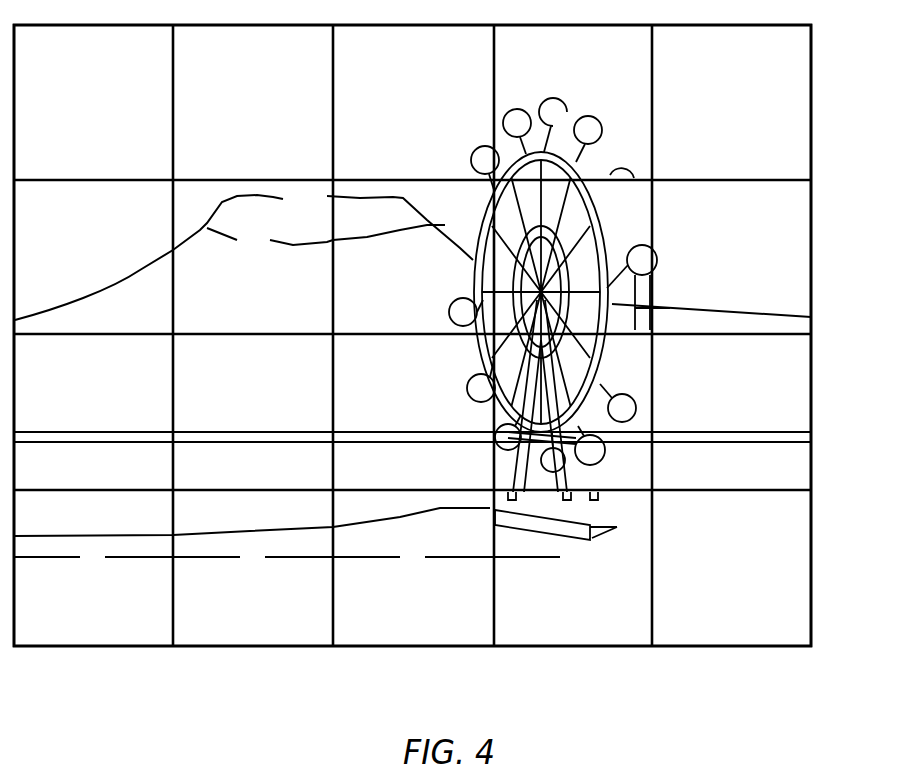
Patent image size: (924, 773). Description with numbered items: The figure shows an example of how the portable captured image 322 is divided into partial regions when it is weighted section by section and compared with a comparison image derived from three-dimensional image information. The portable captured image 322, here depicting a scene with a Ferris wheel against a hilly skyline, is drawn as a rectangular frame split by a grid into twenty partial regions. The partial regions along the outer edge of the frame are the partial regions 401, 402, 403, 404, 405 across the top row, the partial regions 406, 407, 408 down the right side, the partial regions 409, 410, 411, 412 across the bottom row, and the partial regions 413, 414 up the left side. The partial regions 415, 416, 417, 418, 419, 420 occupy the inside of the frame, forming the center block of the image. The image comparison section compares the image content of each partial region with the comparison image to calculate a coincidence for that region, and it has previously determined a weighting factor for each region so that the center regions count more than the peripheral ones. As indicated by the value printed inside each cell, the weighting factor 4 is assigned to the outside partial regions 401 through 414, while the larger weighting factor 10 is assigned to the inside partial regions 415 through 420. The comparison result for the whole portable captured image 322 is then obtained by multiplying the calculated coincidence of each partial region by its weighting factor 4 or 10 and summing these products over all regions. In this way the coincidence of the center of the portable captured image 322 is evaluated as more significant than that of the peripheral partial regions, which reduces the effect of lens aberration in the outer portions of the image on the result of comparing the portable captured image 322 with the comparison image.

The partial region 401 is at (93, 102).
The partial region 402 is at (253, 102).
The partial region 403 is at (413, 102).
The partial region 404 is at (573, 102).
The partial region 405 is at (731, 102).
The partial region 406 is at (731, 257).
The partial region 407 is at (731, 412).
The partial region 408 is at (731, 568).
The partial region 409 is at (573, 568).
The partial region 410 is at (413, 568).
The partial region 411 is at (253, 568).
The partial region 412 is at (93, 568).
The partial region 413 is at (93, 412).
The partial region 414 is at (93, 257).
The partial region 415 is at (253, 257).
The partial region 416 is at (413, 257).
The partial region 417 is at (573, 257).
The partial region 418 is at (573, 412).
The partial region 419 is at (413, 412).
The partial region 420 is at (253, 412).
The portable captured image 322 is at (811, 272).
The weighting factor 4 is at (411, 333).
The weighting factor 10 is at (412, 333).